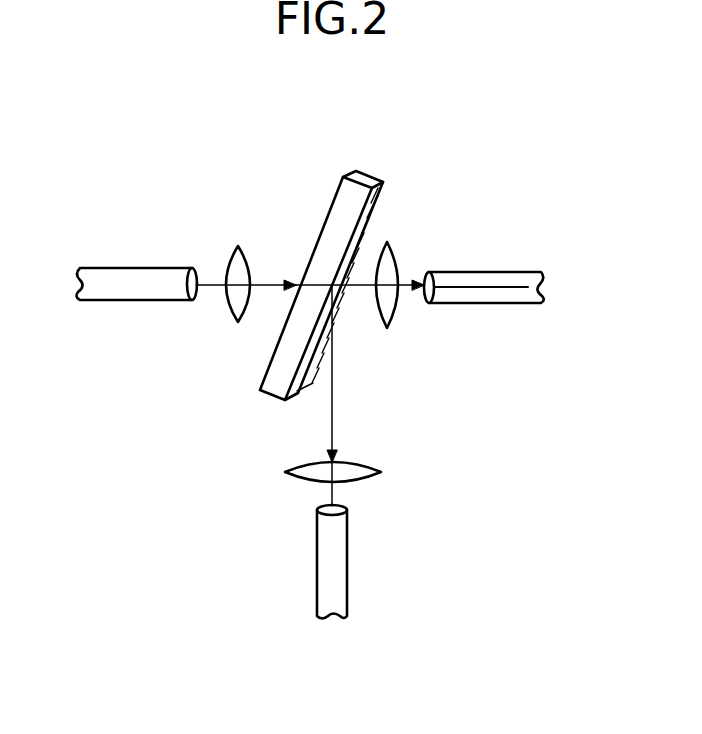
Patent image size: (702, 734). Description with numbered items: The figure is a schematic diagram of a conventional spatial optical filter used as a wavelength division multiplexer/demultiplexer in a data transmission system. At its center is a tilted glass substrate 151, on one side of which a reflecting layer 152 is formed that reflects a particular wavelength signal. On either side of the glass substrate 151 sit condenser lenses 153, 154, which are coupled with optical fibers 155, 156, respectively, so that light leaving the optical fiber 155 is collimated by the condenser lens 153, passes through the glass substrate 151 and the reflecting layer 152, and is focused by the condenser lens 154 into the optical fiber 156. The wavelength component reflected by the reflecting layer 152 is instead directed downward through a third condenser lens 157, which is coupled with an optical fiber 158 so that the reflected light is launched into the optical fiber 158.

The glass substrate 151 is at (347, 198).
The reflecting layer 152 is at (380, 200).
The condenser lens 153 is at (239, 246).
The condenser lens 154 is at (387, 328).
The optical fiber 155 is at (129, 268).
The optical fiber 156 is at (500, 303).
The condenser lens 157 is at (382, 471).
The optical fiber 158 is at (348, 567).